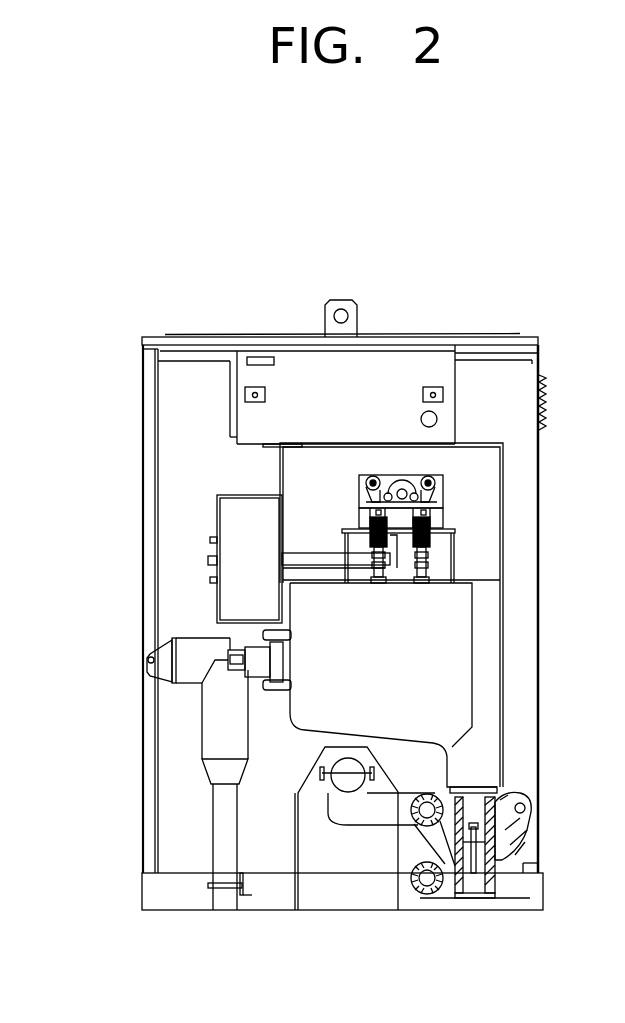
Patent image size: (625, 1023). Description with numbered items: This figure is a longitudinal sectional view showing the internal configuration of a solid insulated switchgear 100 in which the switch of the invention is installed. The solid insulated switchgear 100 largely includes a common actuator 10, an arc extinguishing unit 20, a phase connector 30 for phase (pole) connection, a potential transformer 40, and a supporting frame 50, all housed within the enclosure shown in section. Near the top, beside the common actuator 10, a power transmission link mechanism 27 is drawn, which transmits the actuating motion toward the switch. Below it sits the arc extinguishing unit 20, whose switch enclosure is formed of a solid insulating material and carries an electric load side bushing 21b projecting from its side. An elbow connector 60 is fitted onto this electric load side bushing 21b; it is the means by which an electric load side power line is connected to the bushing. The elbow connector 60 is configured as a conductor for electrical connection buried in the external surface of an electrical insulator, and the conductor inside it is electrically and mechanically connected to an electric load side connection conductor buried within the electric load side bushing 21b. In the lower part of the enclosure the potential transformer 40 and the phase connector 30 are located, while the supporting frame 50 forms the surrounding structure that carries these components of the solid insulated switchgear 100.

The solid insulated switchgear 100 is at (90, 360).
The common actuator 10 is at (238, 520).
The power transmission link mechanism 27 is at (464, 494).
The arc extinguishing unit 20 is at (450, 655).
The electric load side bushing 21b is at (255, 652).
The elbow connector 60 is at (215, 720).
The supporting frame 50 is at (149, 790).
The potential transformer 40 is at (321, 815).
The phase connector 30 is at (531, 823).